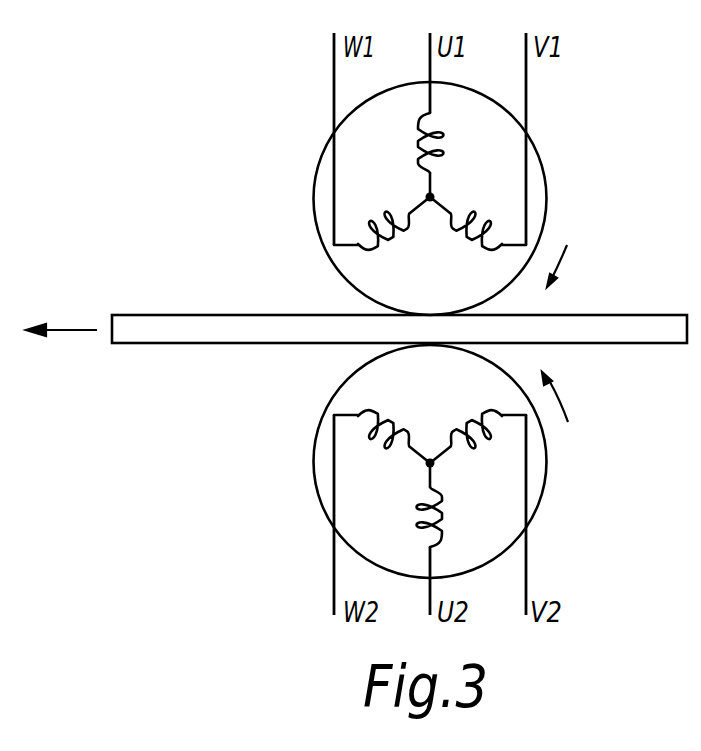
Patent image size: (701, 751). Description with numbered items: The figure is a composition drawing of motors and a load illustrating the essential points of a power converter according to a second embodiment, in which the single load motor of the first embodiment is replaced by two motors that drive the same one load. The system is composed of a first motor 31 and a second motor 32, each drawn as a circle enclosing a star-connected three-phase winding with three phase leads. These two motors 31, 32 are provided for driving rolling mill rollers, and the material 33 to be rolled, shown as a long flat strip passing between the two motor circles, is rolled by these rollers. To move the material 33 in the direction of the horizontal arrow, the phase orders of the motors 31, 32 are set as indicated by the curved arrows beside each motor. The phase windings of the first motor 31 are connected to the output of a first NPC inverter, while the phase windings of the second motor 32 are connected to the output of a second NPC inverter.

The first motor 31 is at (538, 153).
The second motor 32 is at (543, 478).
The material to be rolled 33 is at (637, 315).